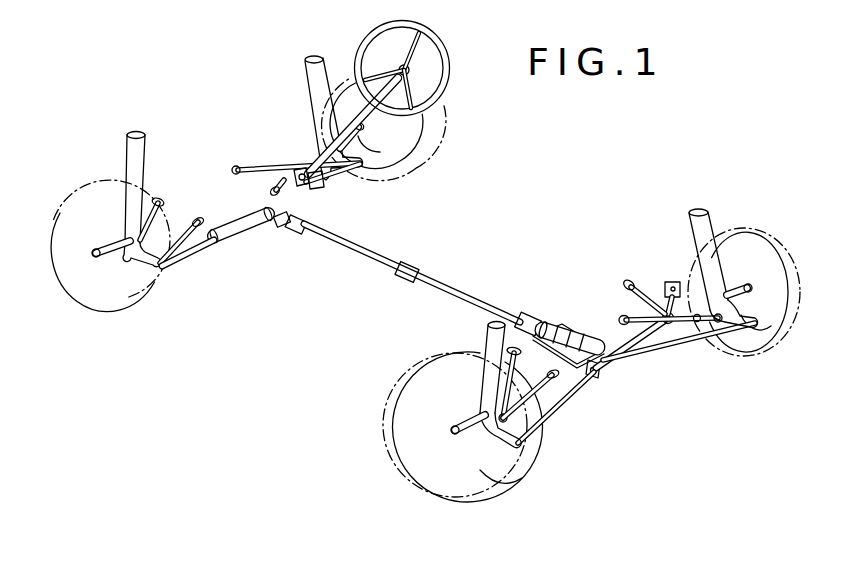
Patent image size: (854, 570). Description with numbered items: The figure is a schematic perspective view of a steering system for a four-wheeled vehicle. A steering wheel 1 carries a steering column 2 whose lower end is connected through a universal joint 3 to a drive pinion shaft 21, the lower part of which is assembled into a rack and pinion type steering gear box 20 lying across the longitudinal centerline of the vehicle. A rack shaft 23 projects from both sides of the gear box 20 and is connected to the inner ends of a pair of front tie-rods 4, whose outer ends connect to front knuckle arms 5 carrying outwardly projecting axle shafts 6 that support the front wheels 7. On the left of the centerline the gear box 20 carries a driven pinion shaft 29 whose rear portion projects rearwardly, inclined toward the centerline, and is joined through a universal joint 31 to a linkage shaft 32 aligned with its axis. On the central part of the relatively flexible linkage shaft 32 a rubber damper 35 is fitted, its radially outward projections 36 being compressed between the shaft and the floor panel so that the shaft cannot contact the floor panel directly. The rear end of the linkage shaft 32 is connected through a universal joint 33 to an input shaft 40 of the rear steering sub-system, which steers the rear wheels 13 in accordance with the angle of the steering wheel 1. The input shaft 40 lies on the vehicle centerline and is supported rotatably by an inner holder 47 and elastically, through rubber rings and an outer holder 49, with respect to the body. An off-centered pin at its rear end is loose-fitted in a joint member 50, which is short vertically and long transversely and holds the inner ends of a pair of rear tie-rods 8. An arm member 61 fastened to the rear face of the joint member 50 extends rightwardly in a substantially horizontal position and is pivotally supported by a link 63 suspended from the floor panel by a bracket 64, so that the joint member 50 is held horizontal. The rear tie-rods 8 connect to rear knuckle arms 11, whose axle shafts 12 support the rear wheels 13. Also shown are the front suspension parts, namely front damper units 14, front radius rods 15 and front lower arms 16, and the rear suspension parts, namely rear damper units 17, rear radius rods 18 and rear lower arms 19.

The steering wheel 1 is at (448, 62).
The steering column 2 is at (318, 150).
The universal joint 3 is at (298, 172).
The front tie-rods 4 is at (194, 258).
The front knuckle arms 5 is at (130, 280).
The axle shafts 6 is at (103, 255).
The front wheels 7 is at (63, 200).
The rear tie-rods 8 is at (724, 338).
The rear knuckle arms 11 is at (510, 486).
The axle shafts 12 is at (423, 482).
The rear wheels 13 is at (452, 491).
The front damper units 14 is at (128, 143).
The front radius rods 15 is at (138, 217).
The front lower arms 16 is at (186, 216).
The rear damper units 17 is at (487, 332).
The rear radius rods 18 is at (629, 279).
The rear lower arms 19 is at (623, 315).
The steering gear box 20 is at (242, 214).
The drive pinion shaft 21 is at (316, 190).
The rack shaft 23 is at (227, 242).
The driven pinion shaft 29 is at (281, 229).
The universal joint 31 is at (296, 234).
The linkage shaft 32 is at (367, 255).
The universal joint 33 is at (528, 315).
The rubber damper 35 is at (420, 266).
The radially outward projections 36 is at (410, 264).
The input shaft 40 is at (540, 323).
The inner holder 47 is at (588, 340).
The outer holder 49 is at (562, 325).
The joint member 50 is at (596, 380).
The arm member 61 is at (634, 368).
The link 63 is at (688, 324).
The bracket 64 is at (668, 280).